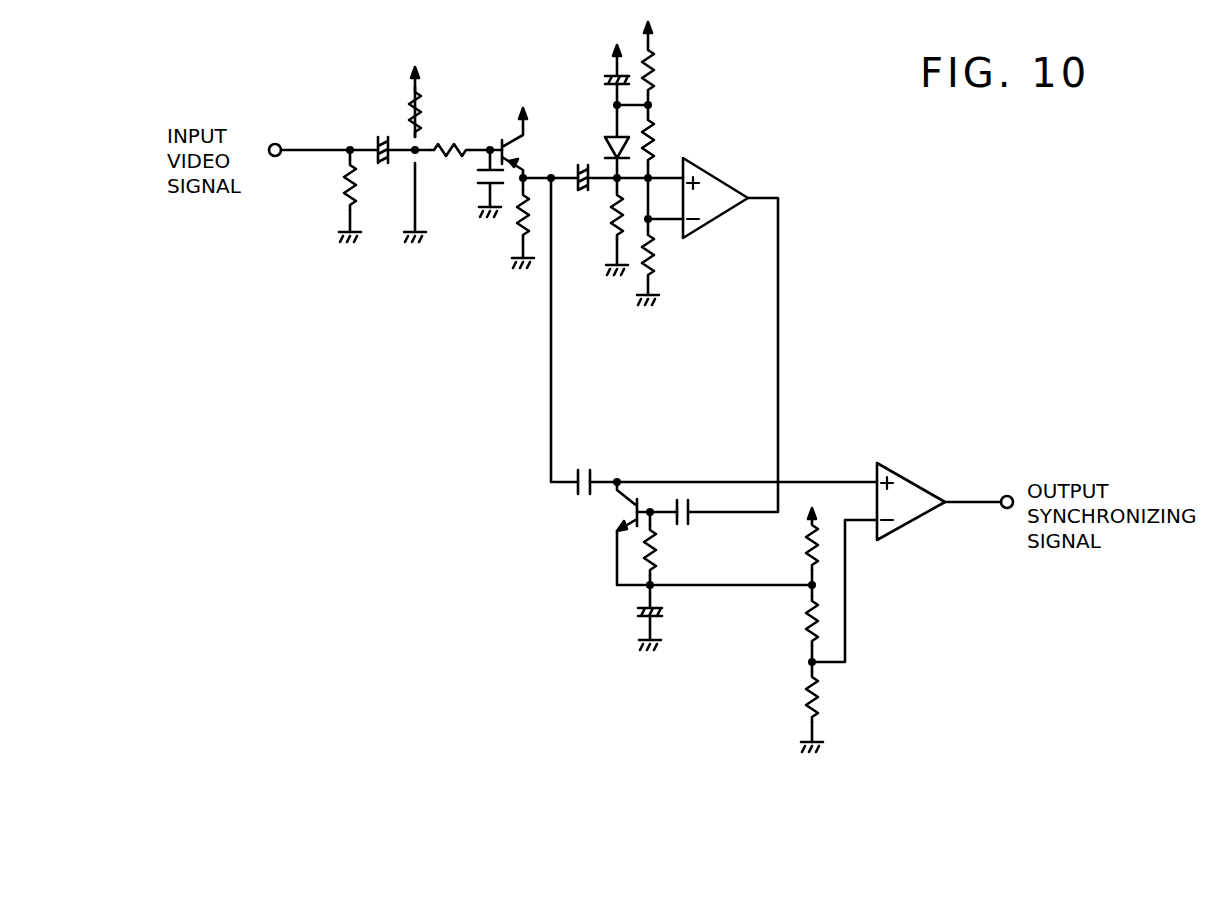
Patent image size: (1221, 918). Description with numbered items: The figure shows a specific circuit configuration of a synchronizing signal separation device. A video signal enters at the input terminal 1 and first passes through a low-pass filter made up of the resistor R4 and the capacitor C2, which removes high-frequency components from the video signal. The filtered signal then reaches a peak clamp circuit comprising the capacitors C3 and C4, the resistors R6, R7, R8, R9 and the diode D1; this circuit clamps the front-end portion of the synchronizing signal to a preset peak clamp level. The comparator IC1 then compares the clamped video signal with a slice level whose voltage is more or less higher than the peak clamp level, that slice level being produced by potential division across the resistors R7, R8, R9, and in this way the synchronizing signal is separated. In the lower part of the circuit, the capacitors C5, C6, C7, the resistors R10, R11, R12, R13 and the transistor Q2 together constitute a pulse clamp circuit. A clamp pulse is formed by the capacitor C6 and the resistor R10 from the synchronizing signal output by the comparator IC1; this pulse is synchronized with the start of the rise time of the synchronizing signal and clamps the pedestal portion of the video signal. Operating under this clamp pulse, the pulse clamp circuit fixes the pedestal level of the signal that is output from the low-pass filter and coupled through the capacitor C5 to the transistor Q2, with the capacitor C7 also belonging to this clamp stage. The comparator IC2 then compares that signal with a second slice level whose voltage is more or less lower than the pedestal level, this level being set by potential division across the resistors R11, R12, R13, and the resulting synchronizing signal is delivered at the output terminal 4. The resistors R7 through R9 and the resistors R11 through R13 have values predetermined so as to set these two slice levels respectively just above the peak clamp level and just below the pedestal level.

The input terminal 1 is at (277, 142).
The output terminal 4 is at (1006, 495).
The resistor R4 is at (450, 135).
The capacitor C2 is at (468, 183).
The capacitor C3 is at (567, 162).
The capacitor C4 is at (592, 75).
The diode D1 is at (602, 141).
The resistor R6 is at (598, 226).
The resistor R7 is at (668, 63).
The resistor R8 is at (668, 141).
The resistor R9 is at (665, 267).
The comparator IC1 is at (719, 188).
The capacitor C5 is at (581, 467).
The transistor Q2 is at (610, 533).
The capacitor C6 is at (704, 505).
The resistor R10 is at (676, 548).
The capacitor C7 is at (669, 617).
The resistor R11 is at (787, 546).
The resistor R12 is at (785, 623).
The resistor R13 is at (787, 707).
The comparator IC2 is at (917, 490).